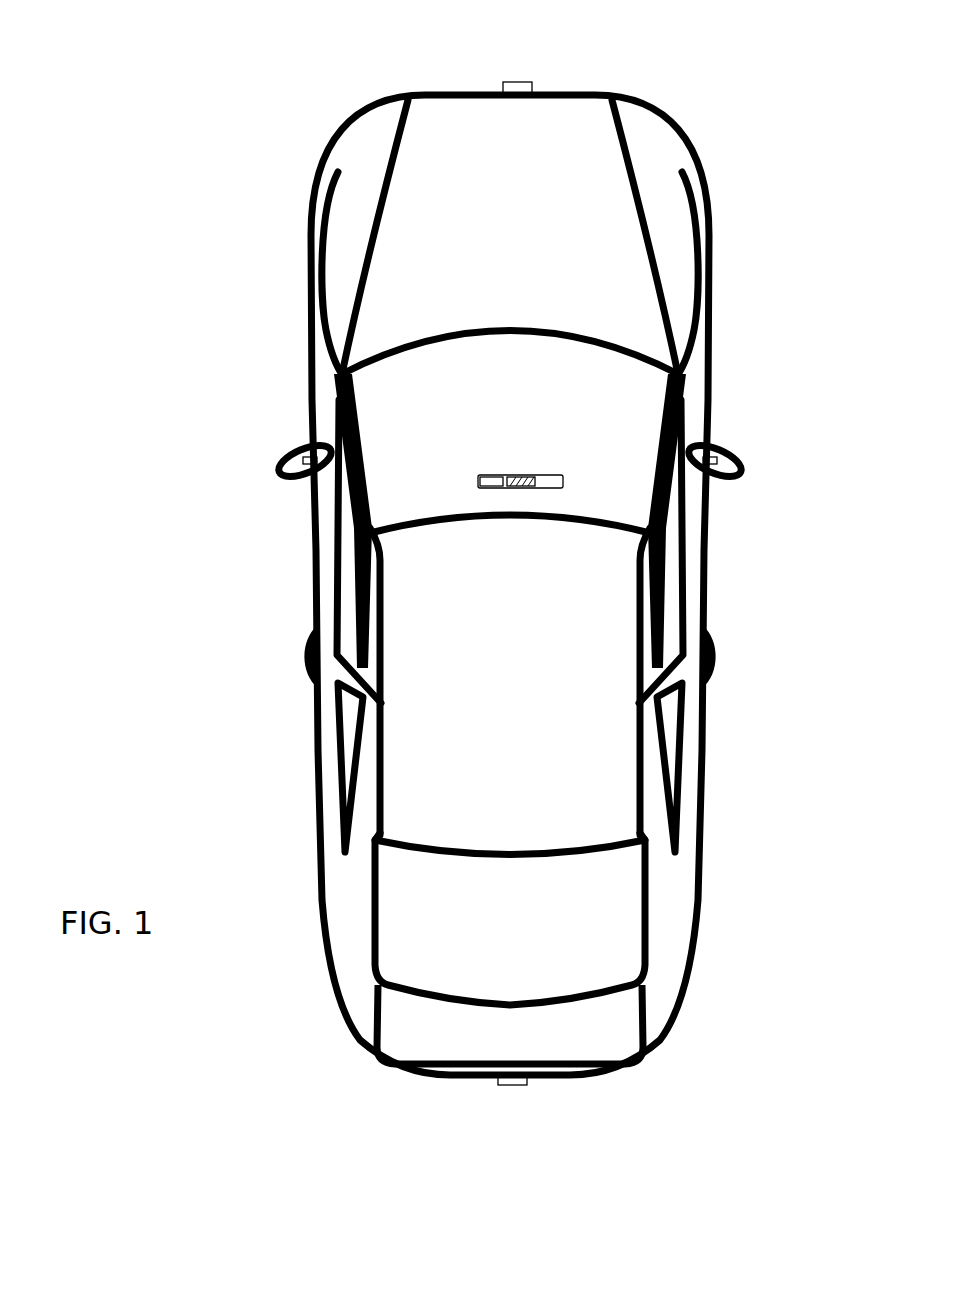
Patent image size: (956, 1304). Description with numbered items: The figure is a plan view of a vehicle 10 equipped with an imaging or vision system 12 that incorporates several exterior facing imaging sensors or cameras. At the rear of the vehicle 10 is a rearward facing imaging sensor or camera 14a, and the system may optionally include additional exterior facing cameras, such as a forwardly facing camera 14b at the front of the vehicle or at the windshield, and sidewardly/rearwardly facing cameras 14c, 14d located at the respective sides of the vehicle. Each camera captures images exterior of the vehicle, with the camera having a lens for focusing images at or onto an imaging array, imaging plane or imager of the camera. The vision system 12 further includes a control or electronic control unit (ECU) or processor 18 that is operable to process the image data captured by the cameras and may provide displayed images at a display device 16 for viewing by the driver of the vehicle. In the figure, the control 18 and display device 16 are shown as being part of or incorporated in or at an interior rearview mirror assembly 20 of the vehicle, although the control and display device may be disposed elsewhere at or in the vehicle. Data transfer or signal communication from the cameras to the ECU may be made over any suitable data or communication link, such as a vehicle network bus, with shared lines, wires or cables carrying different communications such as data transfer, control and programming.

The vehicle 10 is at (258, 182).
The vision system 12 is at (455, 1112).
The rearward facing camera 14a is at (520, 1085).
The forwardly facing camera 14b is at (524, 82).
The sidewardly/rearwardly facing camera 14c is at (300, 453).
The sidewardly/rearwardly facing camera 14d is at (722, 453).
The display device 16 is at (493, 477).
The electronic control unit 18 is at (517, 474).
The interior rearview mirror assembly 20 is at (563, 477).